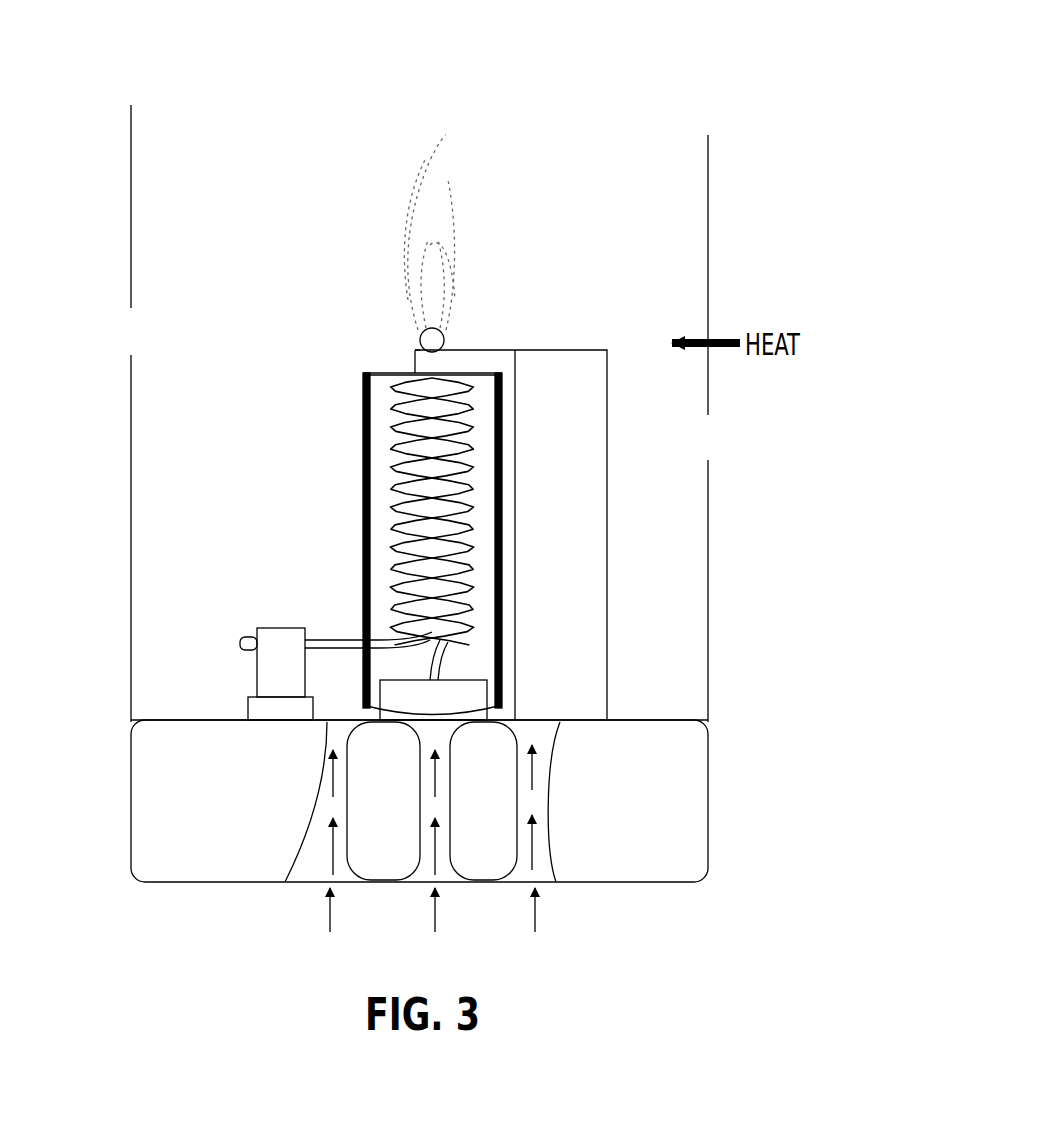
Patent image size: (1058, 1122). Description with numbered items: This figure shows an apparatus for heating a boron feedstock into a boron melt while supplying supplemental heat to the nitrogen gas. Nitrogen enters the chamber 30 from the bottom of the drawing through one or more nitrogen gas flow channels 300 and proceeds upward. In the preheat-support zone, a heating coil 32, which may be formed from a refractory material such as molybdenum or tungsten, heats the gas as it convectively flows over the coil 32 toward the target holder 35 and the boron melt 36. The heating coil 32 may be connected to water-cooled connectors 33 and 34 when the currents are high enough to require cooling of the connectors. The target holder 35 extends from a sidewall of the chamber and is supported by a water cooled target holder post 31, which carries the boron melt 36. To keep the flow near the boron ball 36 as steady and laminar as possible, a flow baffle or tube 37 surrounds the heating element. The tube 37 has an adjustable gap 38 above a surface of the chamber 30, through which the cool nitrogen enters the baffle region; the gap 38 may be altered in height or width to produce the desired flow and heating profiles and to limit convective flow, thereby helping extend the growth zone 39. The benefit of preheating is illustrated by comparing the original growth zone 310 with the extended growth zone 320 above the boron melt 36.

The chamber 30 is at (706, 118).
The nitrogen gas flow channels 300 is at (547, 800).
The water cooled target holder post 31 is at (578, 497).
The heating coil 32 is at (395, 468).
The water-cooled connector 33 is at (452, 694).
The water-cooled connector 34 is at (285, 650).
The target holder 35 is at (470, 372).
The boron melt 36 is at (443, 334).
The flow baffle or tube 37 is at (346, 378).
The adjustable gap 38 is at (349, 714).
The growth zone 39 is at (356, 196).
The original growth zone 310 is at (445, 268).
The extended growth zone 320 is at (455, 172).